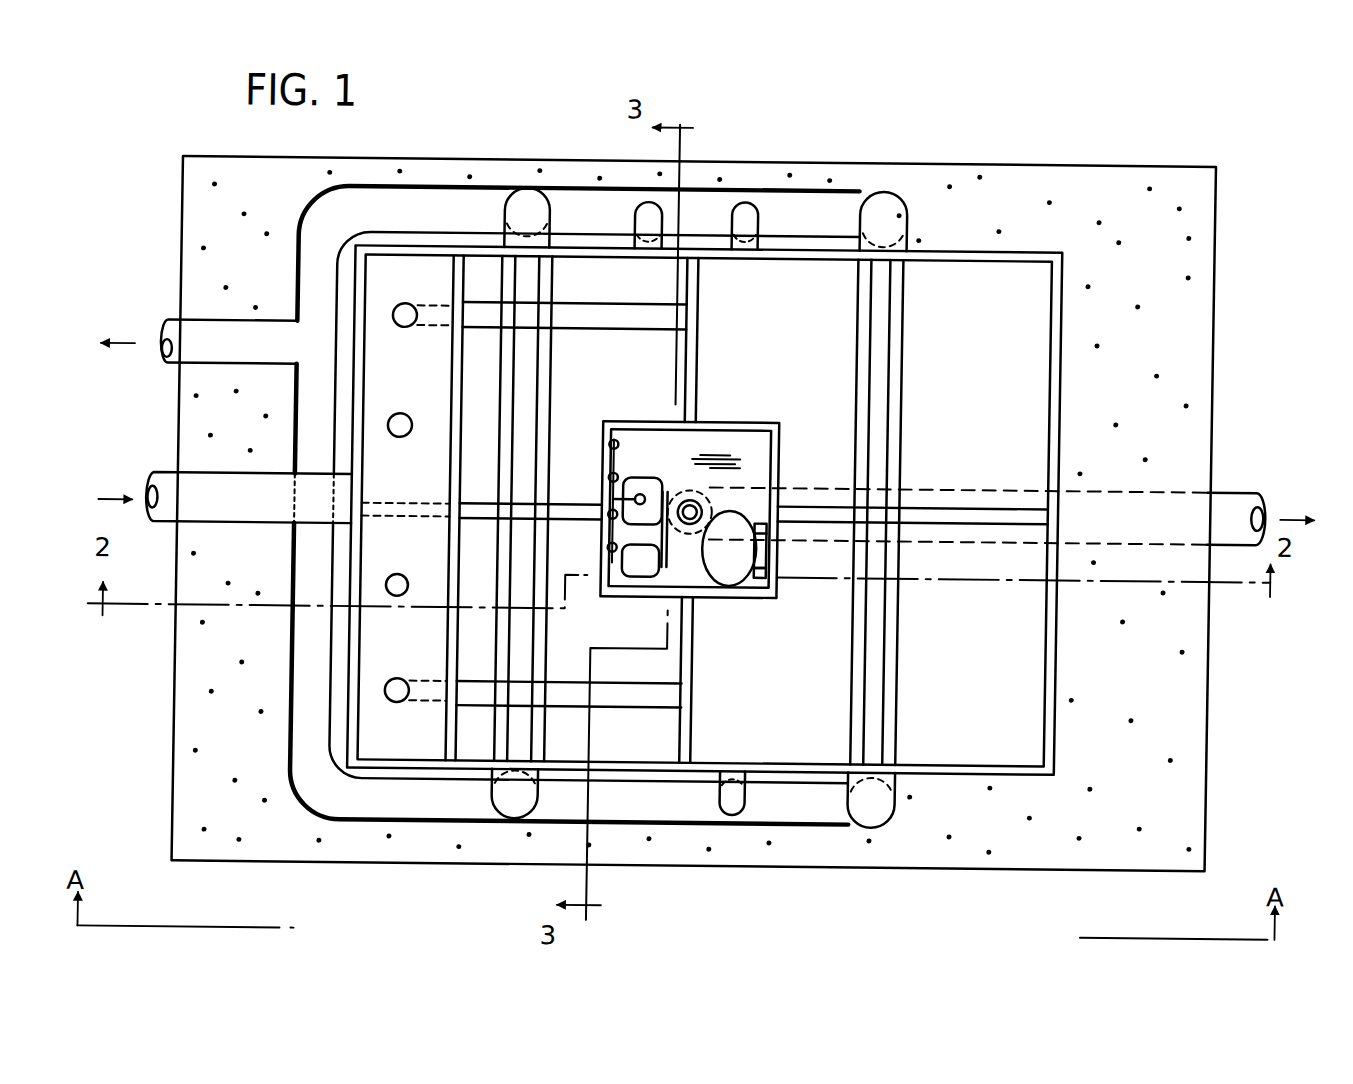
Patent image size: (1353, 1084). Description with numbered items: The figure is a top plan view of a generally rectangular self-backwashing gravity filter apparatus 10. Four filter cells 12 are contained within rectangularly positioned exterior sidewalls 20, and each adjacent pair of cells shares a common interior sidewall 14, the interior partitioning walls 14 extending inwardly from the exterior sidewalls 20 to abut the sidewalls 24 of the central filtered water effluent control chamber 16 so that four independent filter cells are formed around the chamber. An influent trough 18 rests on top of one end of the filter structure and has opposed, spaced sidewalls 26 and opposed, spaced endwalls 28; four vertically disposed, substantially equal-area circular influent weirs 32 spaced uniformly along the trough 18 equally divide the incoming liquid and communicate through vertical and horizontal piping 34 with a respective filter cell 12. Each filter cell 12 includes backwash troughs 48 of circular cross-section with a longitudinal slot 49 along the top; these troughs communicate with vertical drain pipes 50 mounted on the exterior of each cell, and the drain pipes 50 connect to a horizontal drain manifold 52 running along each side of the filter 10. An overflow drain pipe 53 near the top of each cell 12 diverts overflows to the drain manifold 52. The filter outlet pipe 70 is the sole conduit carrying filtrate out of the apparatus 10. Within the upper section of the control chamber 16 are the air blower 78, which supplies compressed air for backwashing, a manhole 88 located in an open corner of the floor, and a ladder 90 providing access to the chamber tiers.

The gravity filter apparatus 10 is at (1069, 197).
The filter cell 12 is at (578, 509).
The interior sidewall 14 is at (984, 510).
The filtered water effluent control chamber 16 is at (724, 444).
The influent trough 18 is at (415, 638).
The exterior sidewall 20 is at (1072, 618).
The sidewall of chamber 24 is at (791, 553).
The sidewall of trough 26 is at (456, 373).
The endwall of trough 28 is at (432, 254).
The circular influent weir 32 is at (408, 438).
The piping 34 is at (606, 314).
The backwash trough 48 is at (506, 429).
The longitudinal slot 49 is at (537, 456).
The vertical drain pipe 50 is at (895, 201).
The horizontal drain manifold 52 is at (576, 198).
The overflow drain pipe 53 is at (759, 212).
The filter outlet pipe 70 is at (1244, 496).
The air blower 78 is at (645, 486).
The manhole 88 is at (729, 548).
The ladder 90 is at (771, 581).